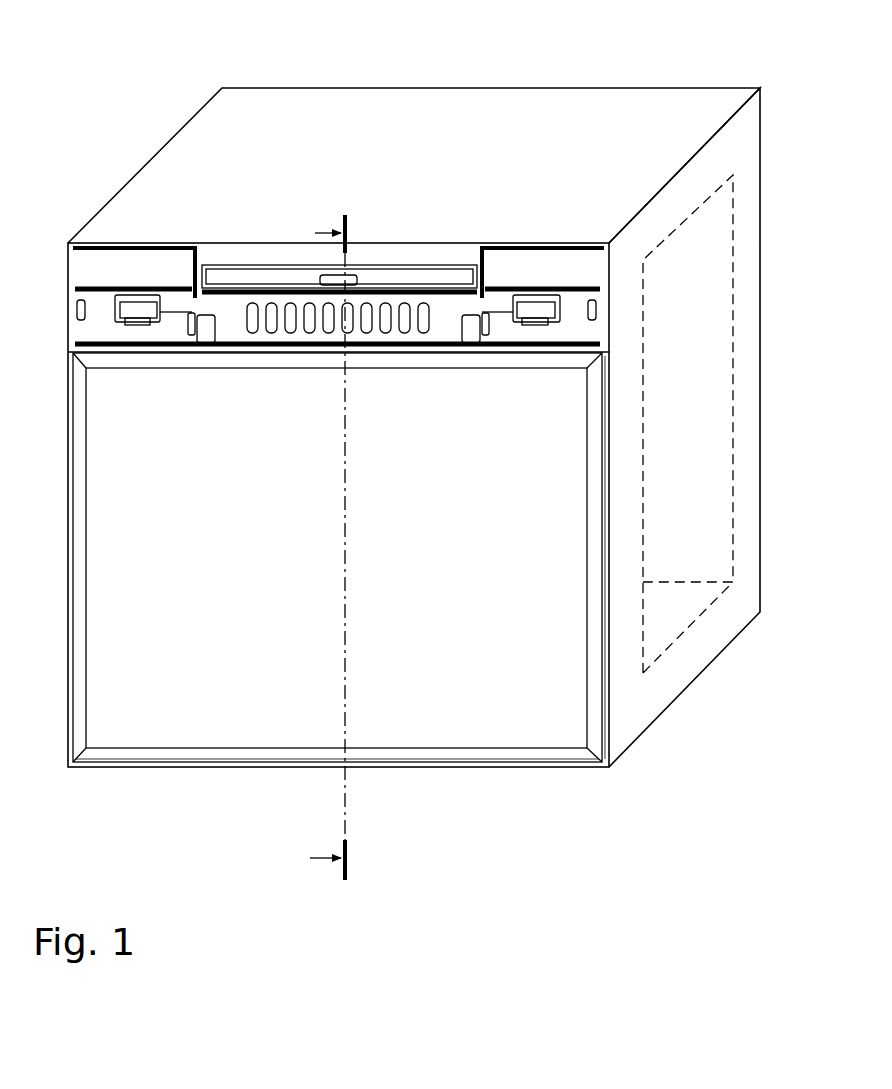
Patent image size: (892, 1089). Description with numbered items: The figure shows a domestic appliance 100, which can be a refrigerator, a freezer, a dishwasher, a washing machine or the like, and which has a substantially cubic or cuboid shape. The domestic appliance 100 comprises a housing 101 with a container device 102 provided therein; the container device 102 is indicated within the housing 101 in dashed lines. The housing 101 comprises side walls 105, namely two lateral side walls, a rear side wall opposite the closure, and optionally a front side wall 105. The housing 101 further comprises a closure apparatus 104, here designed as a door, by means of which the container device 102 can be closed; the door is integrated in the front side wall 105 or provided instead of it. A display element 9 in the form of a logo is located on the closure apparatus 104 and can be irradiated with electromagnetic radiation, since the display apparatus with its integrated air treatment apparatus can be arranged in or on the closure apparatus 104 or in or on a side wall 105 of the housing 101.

The domestic appliance 100 is at (96, 60).
The housing 101 is at (530, 88).
The side wall 105 is at (748, 136).
The container device 102 is at (674, 540).
The closure apparatus 104 is at (145, 728).
The display element 9 is at (400, 670).